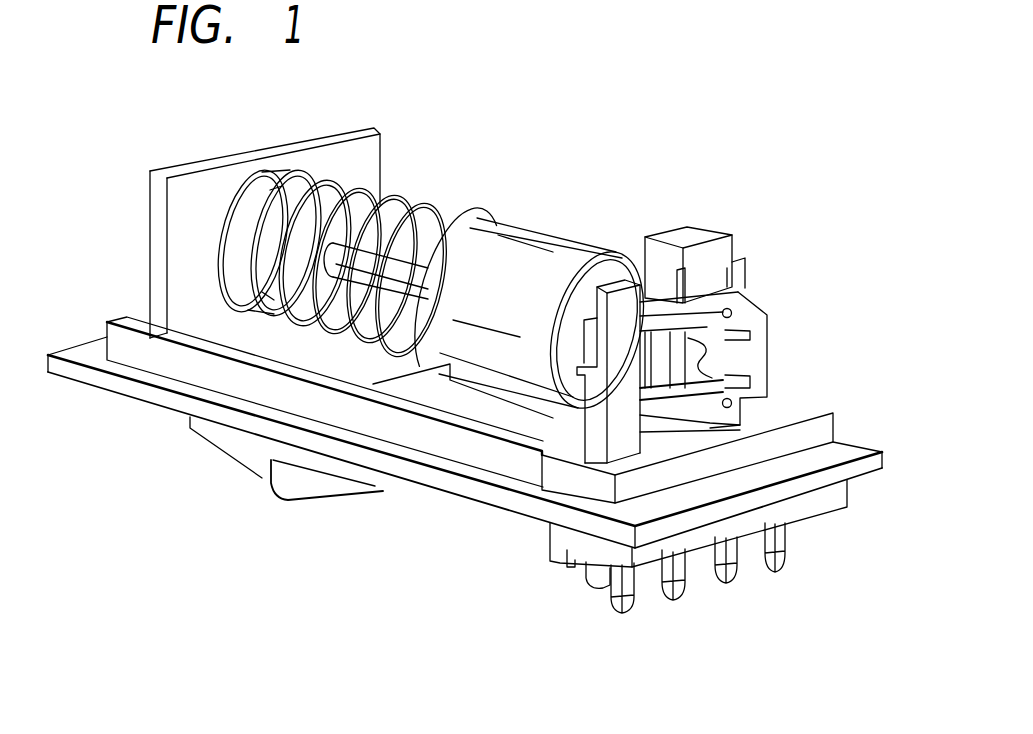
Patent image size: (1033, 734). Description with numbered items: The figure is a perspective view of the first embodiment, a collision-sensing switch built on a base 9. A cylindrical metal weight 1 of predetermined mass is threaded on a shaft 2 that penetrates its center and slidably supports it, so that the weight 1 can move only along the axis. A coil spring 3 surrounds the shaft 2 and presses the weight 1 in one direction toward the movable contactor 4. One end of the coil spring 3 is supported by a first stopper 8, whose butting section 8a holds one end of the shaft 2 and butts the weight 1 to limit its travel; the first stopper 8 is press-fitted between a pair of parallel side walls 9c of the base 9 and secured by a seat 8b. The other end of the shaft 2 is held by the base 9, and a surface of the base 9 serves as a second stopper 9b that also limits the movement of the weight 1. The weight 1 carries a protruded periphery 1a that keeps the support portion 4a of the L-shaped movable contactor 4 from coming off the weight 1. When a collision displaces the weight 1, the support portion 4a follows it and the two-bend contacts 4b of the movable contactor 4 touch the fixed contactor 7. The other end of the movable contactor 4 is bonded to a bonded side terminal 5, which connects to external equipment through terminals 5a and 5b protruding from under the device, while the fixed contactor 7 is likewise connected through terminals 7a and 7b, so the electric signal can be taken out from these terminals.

The metal weight 1 is at (528, 228).
The protruded periphery 1a is at (635, 255).
The shaft 2 is at (412, 255).
The coil spring 3 is at (394, 195).
The movable contactor 4 is at (765, 330).
The support portion 4a is at (736, 288).
The contacts 4b is at (698, 362).
The bonded side terminal 5 is at (582, 428).
The terminal 5a is at (623, 616).
The terminal 5b is at (674, 603).
The fixed contactor 7 is at (733, 268).
The terminal 7a is at (728, 586).
The terminal 7b is at (778, 574).
The first stopper 8 is at (351, 130).
The butting section 8a is at (305, 178).
The seat 8b is at (327, 357).
The base 9 is at (857, 443).
The second stopper 9b is at (688, 228).
The side walls 9c is at (183, 365).